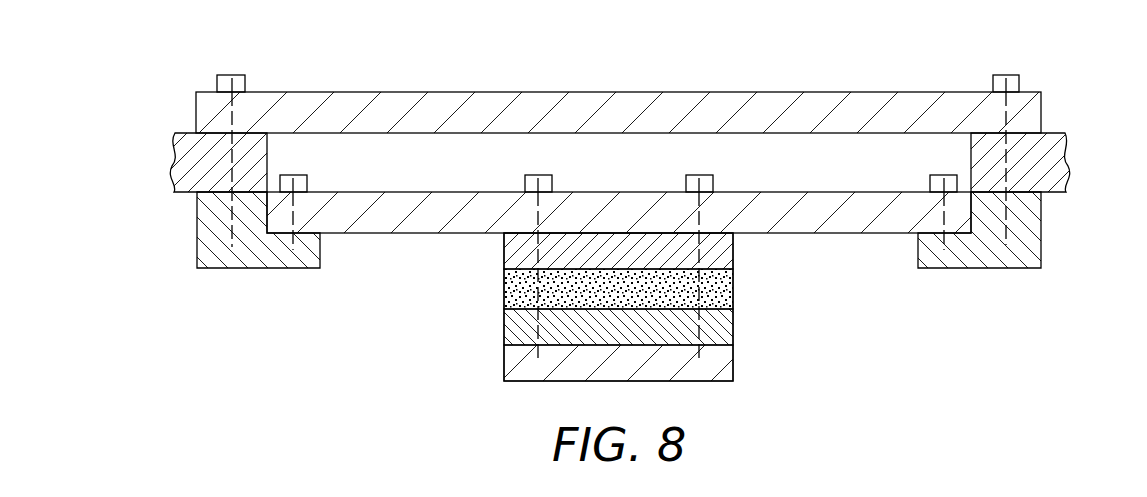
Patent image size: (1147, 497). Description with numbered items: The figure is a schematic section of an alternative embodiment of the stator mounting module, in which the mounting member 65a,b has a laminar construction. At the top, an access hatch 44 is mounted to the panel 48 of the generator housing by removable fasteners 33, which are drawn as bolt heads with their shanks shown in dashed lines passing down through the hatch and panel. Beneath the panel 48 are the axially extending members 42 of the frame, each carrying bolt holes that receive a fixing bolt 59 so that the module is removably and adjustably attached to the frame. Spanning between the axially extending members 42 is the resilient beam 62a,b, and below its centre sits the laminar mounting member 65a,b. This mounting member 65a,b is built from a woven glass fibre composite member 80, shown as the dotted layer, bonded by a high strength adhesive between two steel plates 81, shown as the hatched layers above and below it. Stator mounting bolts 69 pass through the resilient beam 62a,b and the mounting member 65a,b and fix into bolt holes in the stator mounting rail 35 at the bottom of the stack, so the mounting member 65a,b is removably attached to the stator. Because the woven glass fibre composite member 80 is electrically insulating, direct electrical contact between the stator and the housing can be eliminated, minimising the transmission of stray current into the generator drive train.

The removable fastener 33 is at (232, 75).
The access hatch 44 is at (618, 102).
The panel 48 is at (175, 162).
The axially extending member 42 is at (203, 248).
The fixing bolt 59 is at (308, 182).
The stator mounting bolt 69 is at (524, 180).
The resilient beam 62a,b is at (866, 223).
The steel plate 81 is at (725, 252).
The woven glass fibre composite member 80 is at (513, 290).
The mounting member 65a,b is at (735, 320).
The stator mounting rail 35 is at (725, 364).